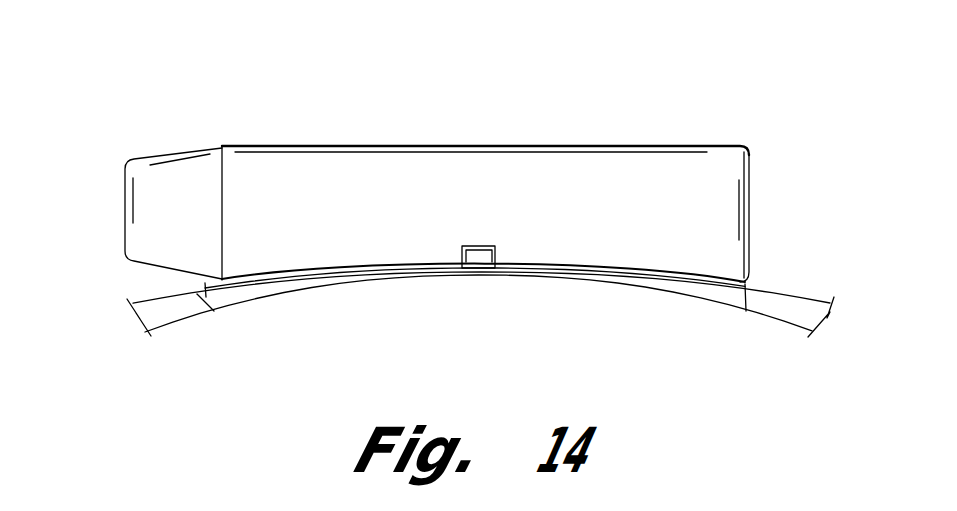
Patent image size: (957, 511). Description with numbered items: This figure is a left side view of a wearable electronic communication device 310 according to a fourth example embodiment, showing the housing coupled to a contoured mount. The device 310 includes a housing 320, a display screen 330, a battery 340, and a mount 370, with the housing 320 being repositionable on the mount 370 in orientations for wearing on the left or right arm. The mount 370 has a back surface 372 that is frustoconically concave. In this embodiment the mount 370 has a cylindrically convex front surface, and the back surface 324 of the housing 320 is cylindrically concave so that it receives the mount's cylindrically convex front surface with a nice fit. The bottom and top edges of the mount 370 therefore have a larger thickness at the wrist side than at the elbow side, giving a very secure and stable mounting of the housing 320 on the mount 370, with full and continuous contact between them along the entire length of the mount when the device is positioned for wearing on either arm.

The wearable electronic communication device 310 is at (442, 153).
The housing 320 is at (752, 162).
The back surface of the housing 324 is at (378, 262).
The display screen 330 is at (292, 142).
The battery 340 is at (176, 150).
The mount 370 is at (310, 290).
The back surface of the mount 372 is at (733, 308).